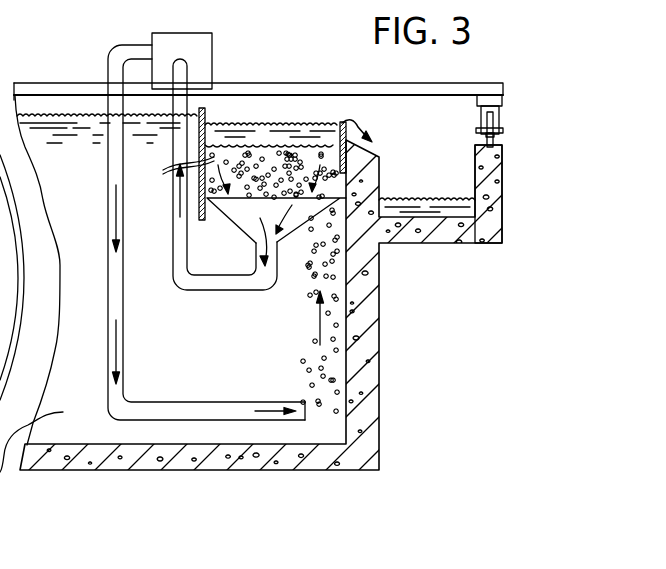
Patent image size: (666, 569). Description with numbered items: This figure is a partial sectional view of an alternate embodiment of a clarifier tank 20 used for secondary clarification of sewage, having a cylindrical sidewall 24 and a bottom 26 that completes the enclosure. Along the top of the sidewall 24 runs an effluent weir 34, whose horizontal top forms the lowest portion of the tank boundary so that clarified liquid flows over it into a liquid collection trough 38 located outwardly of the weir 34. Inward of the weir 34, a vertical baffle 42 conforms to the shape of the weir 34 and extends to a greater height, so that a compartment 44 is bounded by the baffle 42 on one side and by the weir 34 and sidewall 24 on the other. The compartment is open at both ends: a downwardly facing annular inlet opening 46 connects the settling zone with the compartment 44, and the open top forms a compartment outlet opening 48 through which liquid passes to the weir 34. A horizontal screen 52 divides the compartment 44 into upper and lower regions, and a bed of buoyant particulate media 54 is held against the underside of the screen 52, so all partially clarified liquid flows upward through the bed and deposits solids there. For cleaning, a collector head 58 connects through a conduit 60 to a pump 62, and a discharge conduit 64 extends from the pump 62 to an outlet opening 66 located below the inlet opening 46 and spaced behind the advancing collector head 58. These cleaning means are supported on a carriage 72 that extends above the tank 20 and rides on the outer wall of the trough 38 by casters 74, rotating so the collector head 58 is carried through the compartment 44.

The clarifier tank 20 is at (333, 308).
The sidewall 24 is at (383, 303).
The bottom 26 is at (318, 465).
The effluent weir 34 is at (372, 150).
The liquid collection trough 38 is at (333, 282).
The vertical baffle 42 is at (205, 113).
The compartment 44 is at (252, 170).
The inlet opening 46 is at (300, 255).
The compartment outlet opening 48 is at (326, 130).
The screen 52 is at (317, 128).
The bed of particulate media 54 is at (174, 171).
The collector head 58 is at (260, 208).
The conduit 60 is at (203, 292).
The pump 62 is at (212, 45).
The discharge conduit 64 is at (124, 278).
The outlet opening 66 is at (305, 400).
The carriage 72 is at (415, 81).
The casters 74 is at (476, 143).